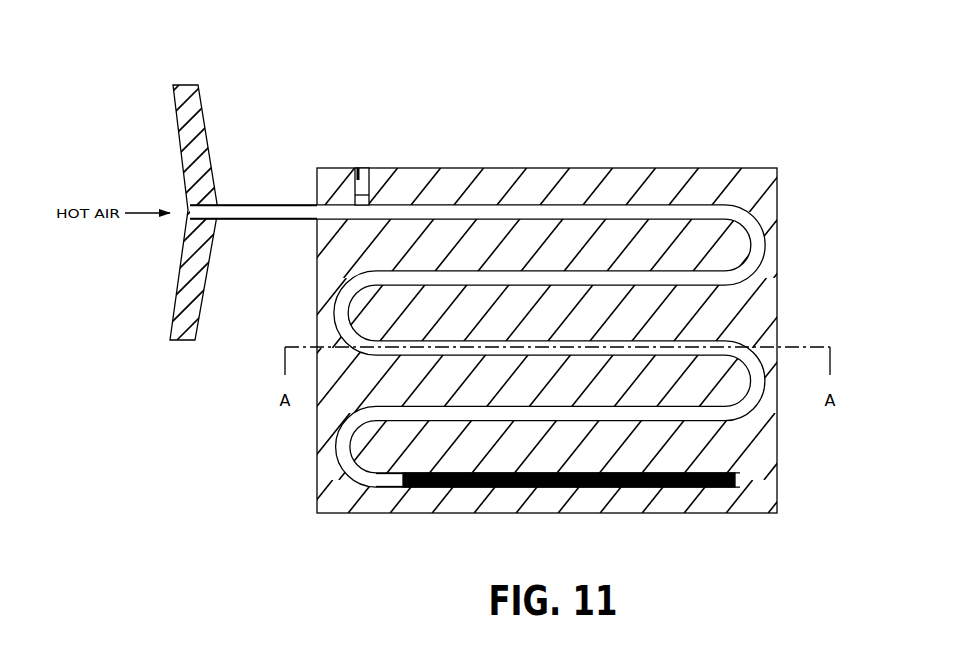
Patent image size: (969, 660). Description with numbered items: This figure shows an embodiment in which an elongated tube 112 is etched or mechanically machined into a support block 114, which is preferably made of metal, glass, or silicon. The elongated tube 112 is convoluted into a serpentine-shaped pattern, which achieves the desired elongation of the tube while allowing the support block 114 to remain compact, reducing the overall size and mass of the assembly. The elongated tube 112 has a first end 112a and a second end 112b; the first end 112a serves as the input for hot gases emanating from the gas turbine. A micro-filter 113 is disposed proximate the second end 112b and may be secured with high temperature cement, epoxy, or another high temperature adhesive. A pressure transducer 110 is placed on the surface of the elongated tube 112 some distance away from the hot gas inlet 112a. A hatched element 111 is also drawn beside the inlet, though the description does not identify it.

The pressure transducer 110 is at (358, 168).
The lens 111 is at (187, 83).
The elongated tube 112 is at (760, 213).
The first end 112a is at (187, 223).
The second end 112b is at (395, 488).
The micro-filter 113 is at (613, 489).
The support block 114 is at (625, 167).